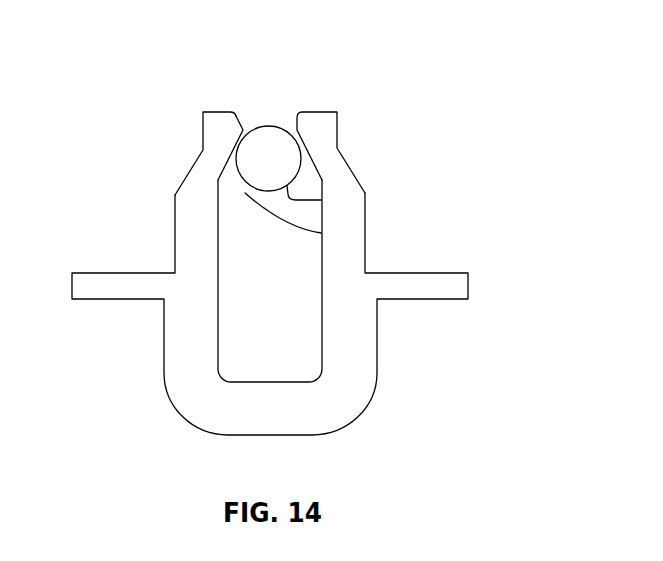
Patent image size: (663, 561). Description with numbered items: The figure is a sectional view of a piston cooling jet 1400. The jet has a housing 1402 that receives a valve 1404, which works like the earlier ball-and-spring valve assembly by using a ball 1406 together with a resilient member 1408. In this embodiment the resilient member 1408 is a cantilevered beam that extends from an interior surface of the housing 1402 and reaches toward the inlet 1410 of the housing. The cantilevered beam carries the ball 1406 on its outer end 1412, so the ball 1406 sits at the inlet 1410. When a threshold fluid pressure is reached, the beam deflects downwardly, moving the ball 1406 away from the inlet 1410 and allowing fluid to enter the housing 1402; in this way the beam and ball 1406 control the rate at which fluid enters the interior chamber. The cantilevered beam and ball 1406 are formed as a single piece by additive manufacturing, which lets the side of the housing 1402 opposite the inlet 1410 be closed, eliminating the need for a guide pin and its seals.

The piston cooling jet 1400 is at (304, 234).
The housing 1402 is at (343, 176).
The valve 1404 is at (154, 193).
The ball 1406 is at (269, 125).
The resilient member 1408 is at (280, 203).
The inlet 1410 is at (244, 136).
The outer end 1412 is at (250, 193).